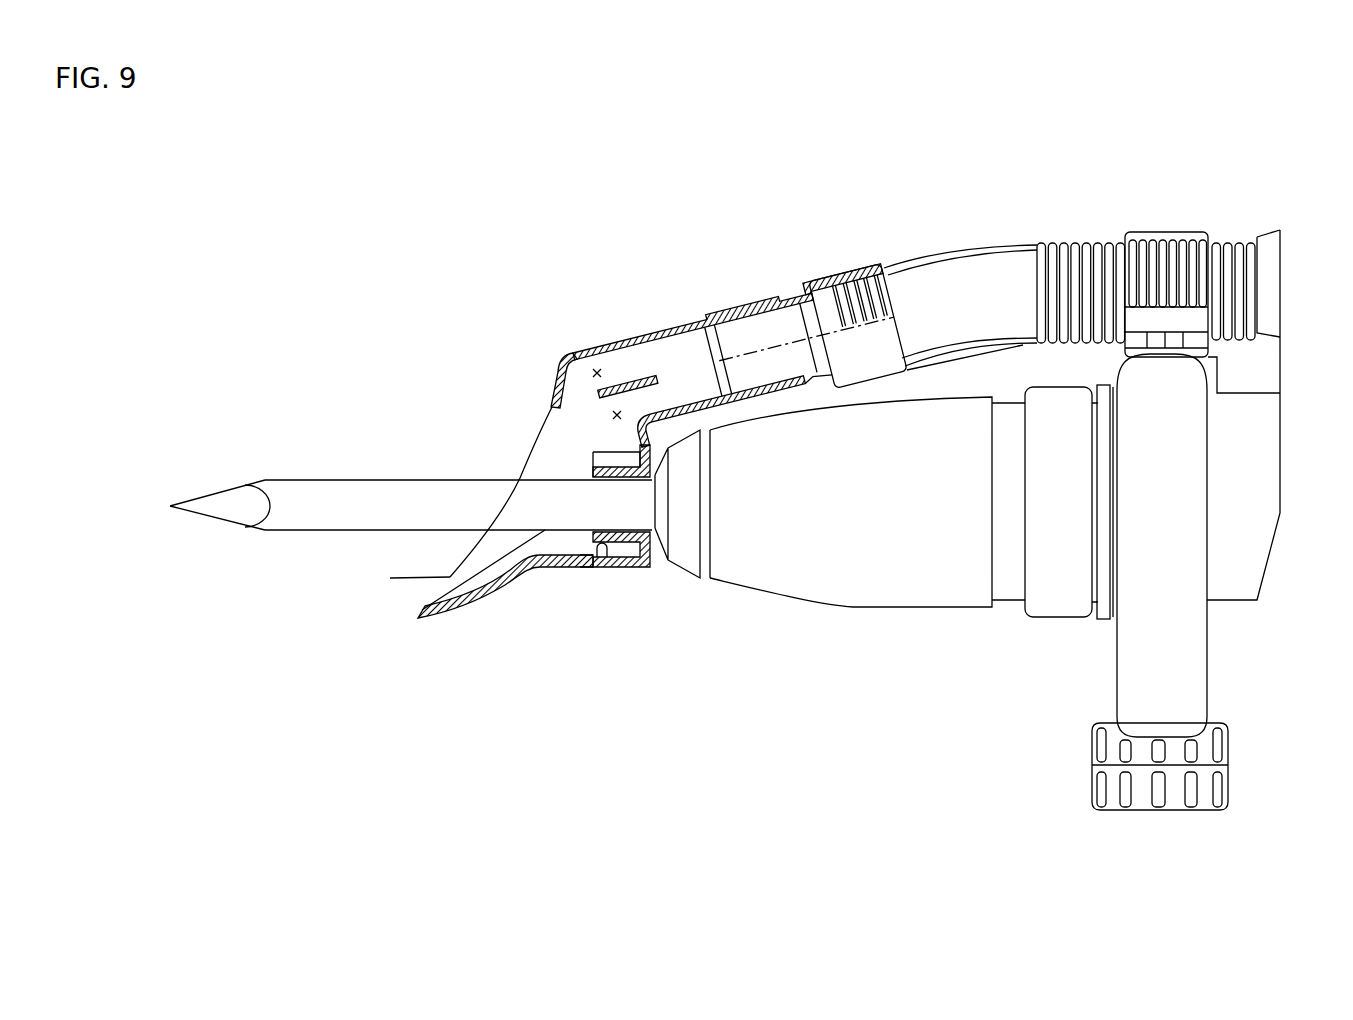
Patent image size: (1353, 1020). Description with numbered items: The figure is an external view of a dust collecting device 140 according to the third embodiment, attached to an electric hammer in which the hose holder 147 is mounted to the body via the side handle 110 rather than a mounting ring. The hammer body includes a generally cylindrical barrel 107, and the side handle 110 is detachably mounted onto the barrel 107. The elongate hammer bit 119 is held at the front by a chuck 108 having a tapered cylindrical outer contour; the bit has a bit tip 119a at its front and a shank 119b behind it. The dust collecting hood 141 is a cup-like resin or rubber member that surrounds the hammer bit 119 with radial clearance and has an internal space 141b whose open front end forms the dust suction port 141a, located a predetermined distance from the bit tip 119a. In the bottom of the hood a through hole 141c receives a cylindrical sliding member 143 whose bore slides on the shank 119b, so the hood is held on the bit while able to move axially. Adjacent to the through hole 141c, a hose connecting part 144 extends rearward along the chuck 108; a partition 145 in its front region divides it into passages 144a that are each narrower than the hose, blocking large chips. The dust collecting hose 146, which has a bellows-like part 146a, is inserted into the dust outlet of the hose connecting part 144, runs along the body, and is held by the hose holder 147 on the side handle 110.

The barrel 107 is at (1255, 589).
The chuck 108 is at (867, 603).
The side handle 110 is at (1120, 659).
The hammer bit 119 is at (305, 478).
The bit tip 119a is at (222, 512).
The shank 119b is at (438, 490).
The dust collecting device 140 is at (815, 223).
The dust collecting hood 141 is at (462, 614).
The dust suction port 141a is at (390, 578).
The internal space 141b is at (556, 445).
The through hole 141c is at (597, 563).
The cylindrical sliding member 143 is at (617, 543).
The hose connecting part 144 is at (688, 328).
The passages 144a is at (615, 415).
The partition 145 is at (623, 383).
The dust collecting hose 146 is at (977, 245).
The bellows-like part 146a is at (1097, 242).
The hose holder 147 is at (1175, 235).